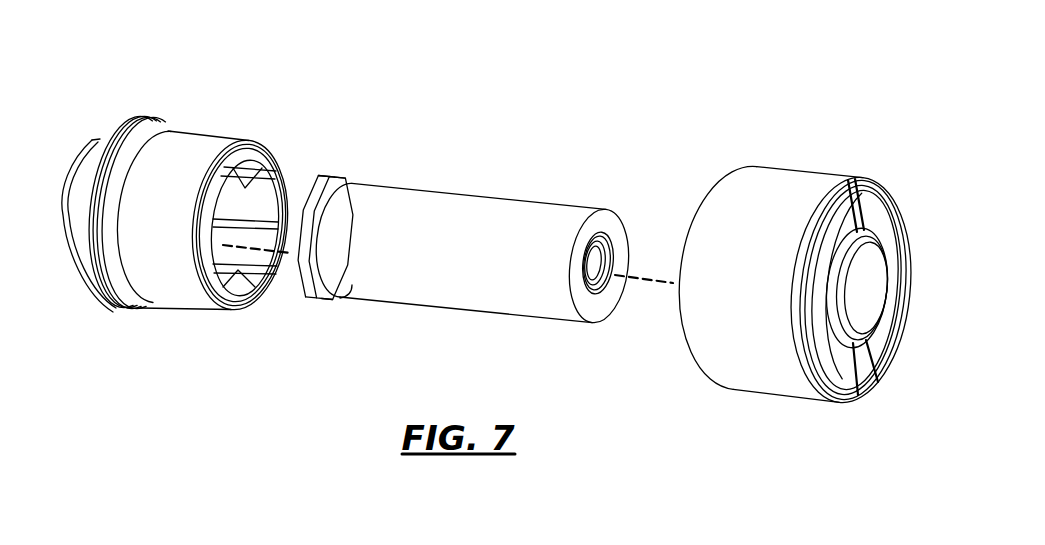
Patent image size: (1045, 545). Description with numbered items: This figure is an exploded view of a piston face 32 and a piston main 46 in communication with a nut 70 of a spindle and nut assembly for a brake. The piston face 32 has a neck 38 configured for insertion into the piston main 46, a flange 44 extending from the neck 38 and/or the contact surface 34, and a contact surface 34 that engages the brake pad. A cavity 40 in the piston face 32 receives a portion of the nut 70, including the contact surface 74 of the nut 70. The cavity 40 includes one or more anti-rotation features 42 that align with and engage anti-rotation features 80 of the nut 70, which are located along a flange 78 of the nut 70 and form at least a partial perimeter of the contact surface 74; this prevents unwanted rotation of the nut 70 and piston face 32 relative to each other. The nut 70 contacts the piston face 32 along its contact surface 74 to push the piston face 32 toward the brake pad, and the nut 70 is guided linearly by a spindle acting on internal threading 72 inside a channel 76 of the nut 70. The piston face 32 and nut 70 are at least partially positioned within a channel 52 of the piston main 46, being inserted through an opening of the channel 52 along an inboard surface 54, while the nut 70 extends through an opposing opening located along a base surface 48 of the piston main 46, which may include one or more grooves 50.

The piston face 32 is at (188, 196).
The contact surface 34 is at (63, 217).
The neck 38 is at (185, 147).
The cavity 40 is at (286, 164).
The anti-rotation features 42 is at (248, 175).
The flange 44 is at (145, 308).
The piston main 46 is at (812, 280).
The base surface 48 is at (836, 346).
The grooves 50 is at (843, 208).
The channel 52 is at (848, 267).
The inboard surface 54 is at (687, 350).
The nut 70 is at (475, 245).
The internal threading 72 is at (608, 247).
The contact surface 74 is at (303, 262).
The channel 76 is at (603, 306).
The flange 78 is at (338, 296).
The anti-rotation features 80 is at (326, 182).